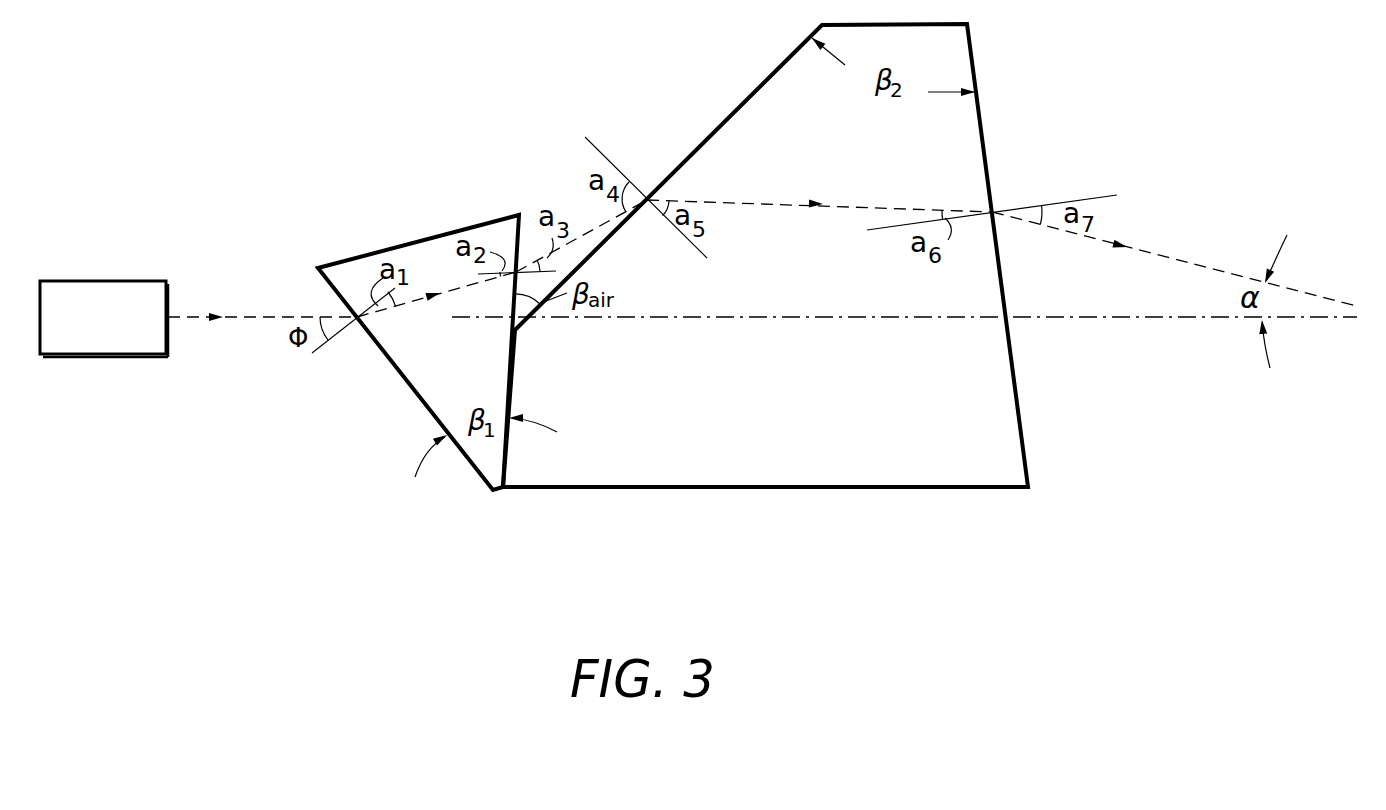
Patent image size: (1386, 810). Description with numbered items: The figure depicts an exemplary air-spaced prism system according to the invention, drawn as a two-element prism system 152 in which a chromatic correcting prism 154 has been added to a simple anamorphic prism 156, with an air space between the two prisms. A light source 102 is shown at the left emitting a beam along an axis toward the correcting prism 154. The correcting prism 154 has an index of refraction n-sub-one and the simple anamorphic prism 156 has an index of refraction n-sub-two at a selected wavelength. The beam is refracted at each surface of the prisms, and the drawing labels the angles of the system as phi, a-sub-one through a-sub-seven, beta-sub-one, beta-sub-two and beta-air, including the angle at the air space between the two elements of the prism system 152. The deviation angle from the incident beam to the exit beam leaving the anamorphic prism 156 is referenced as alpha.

The light source 102 is at (146, 280).
The two-element prism system 152 is at (715, 310).
The chromatic correcting prism 154 is at (403, 360).
The simple anamorphic prism 156 is at (808, 255).